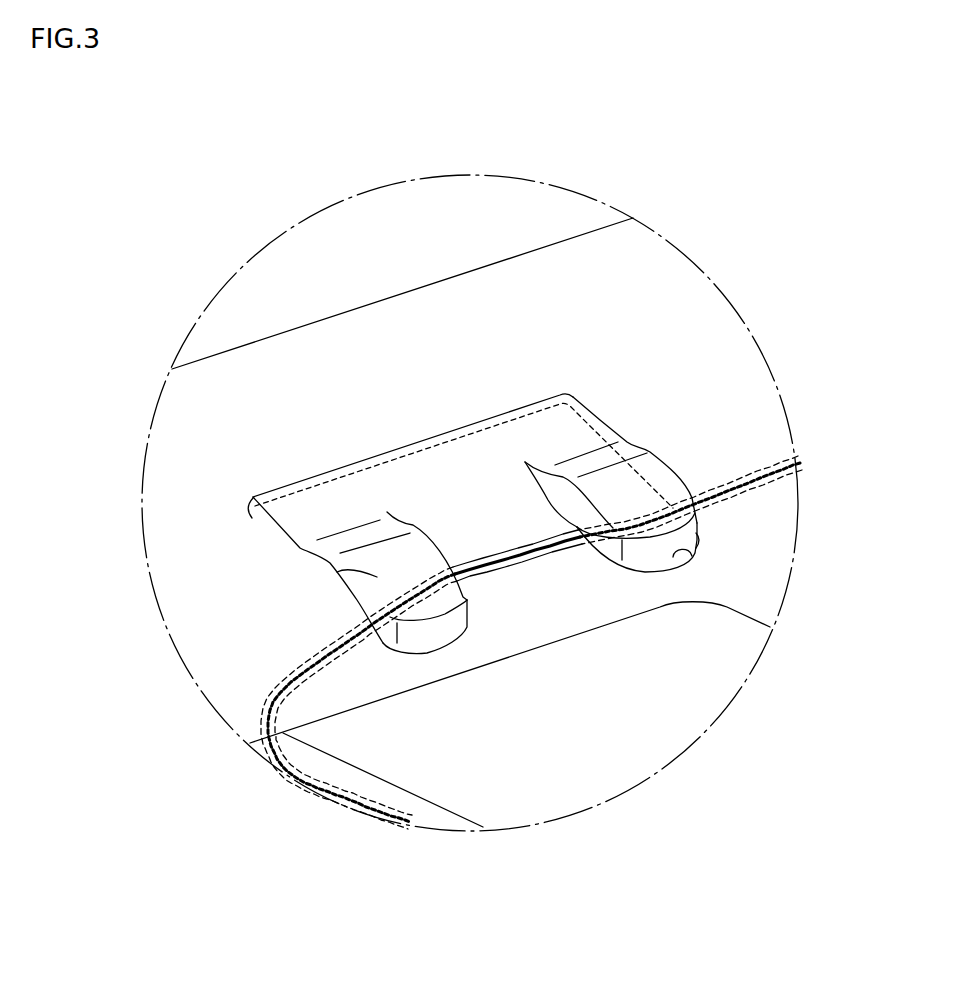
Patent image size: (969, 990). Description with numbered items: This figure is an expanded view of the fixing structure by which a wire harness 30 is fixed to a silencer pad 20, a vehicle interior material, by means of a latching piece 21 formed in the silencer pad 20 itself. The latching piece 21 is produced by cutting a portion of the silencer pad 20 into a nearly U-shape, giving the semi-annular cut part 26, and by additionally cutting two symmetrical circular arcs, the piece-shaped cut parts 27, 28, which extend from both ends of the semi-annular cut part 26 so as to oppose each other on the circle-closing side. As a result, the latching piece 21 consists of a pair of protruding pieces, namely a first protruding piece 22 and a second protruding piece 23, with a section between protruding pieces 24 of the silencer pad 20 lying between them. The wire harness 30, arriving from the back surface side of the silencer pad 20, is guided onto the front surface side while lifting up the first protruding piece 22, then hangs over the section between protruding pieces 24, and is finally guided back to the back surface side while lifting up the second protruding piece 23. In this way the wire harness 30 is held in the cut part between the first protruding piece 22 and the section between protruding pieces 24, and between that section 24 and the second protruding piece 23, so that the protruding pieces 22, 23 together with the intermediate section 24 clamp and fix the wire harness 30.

The silencer pad 20 is at (643, 273).
The latching piece 21 is at (524, 454).
The first protruding piece 22 is at (663, 488).
The second protruding piece 23 is at (337, 572).
The section between protruding pieces 24 is at (522, 578).
The semi-annular cut part 26 is at (402, 457).
The piece-shaped cut part 27 is at (690, 556).
The piece-shaped cut part 28 is at (352, 610).
The wire harness 30 is at (757, 470).